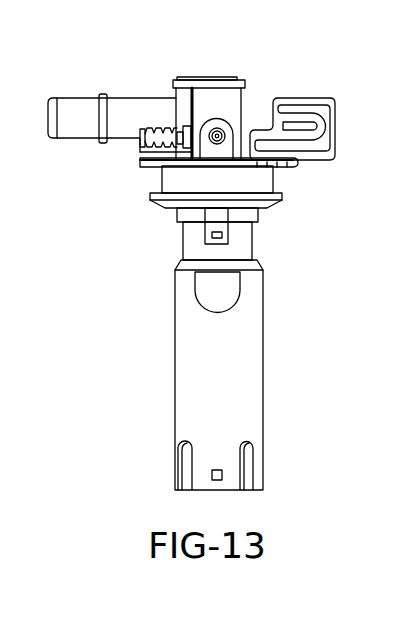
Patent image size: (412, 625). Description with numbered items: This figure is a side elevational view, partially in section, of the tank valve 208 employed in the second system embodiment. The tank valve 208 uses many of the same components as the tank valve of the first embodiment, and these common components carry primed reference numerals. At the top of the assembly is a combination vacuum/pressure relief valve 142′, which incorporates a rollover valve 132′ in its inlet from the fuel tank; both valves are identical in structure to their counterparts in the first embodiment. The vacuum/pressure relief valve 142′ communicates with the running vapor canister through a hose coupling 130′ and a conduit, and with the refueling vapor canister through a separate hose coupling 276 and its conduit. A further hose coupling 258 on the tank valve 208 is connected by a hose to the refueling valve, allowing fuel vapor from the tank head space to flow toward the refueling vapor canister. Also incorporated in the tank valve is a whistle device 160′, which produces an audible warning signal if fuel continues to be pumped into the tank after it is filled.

The hose coupling 258 is at (65, 108).
The hose coupling 276 is at (140, 124).
The combination vacuum/pressure relief valve 142′ is at (180, 93).
The hose coupling 130′ is at (222, 129).
The whistle device 160′ is at (337, 130).
The rollover valve 132′ is at (204, 233).
The tank valve 208 is at (350, 330).